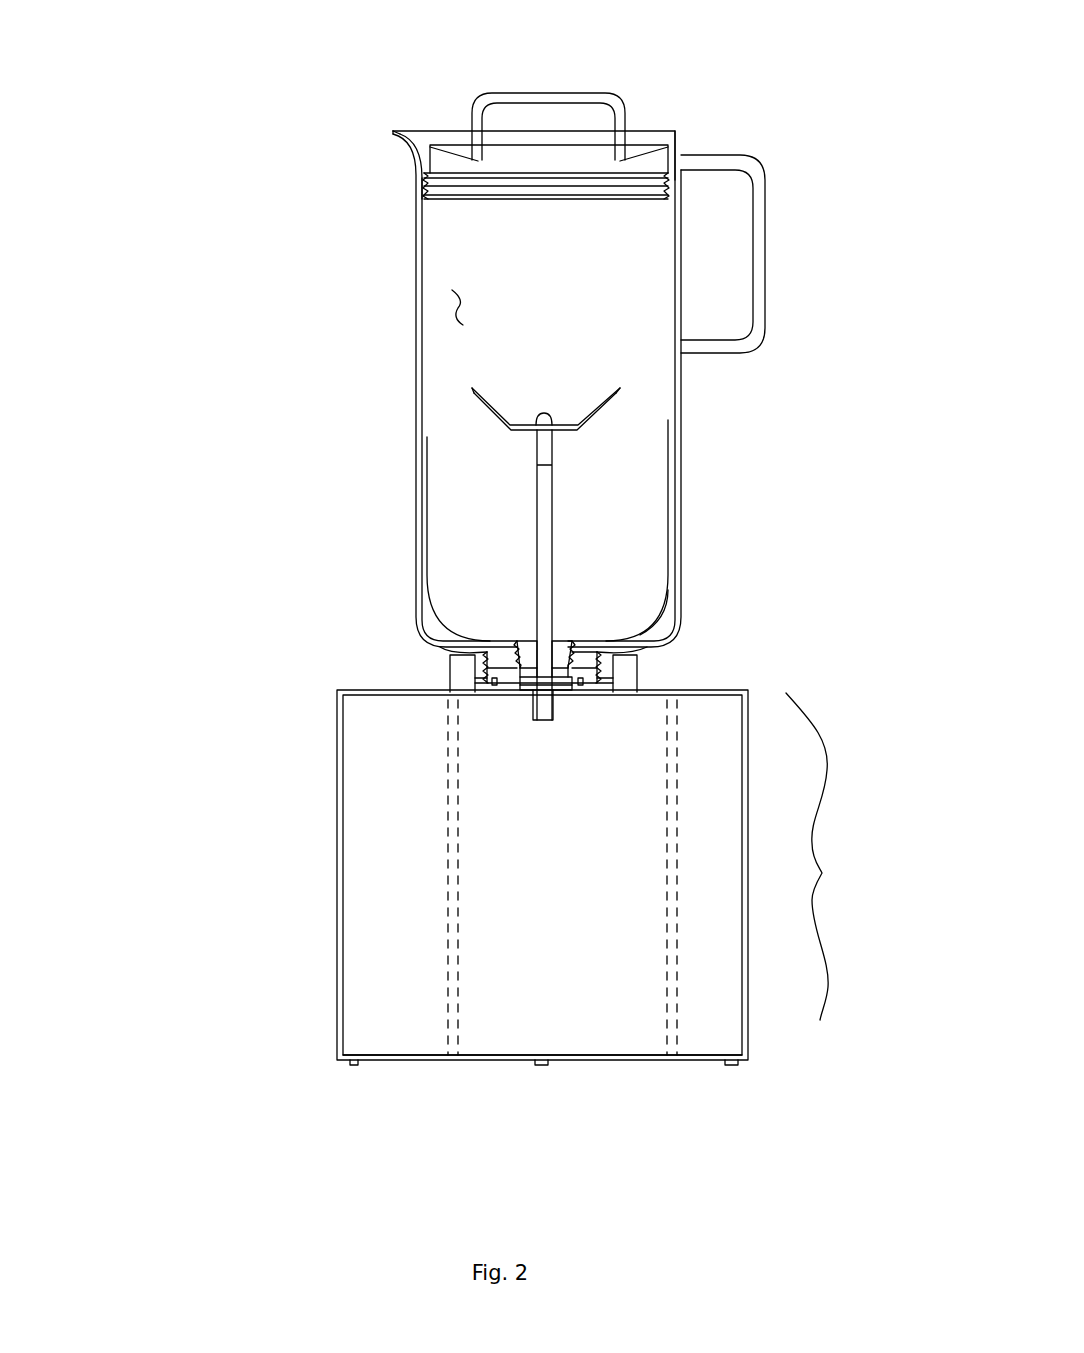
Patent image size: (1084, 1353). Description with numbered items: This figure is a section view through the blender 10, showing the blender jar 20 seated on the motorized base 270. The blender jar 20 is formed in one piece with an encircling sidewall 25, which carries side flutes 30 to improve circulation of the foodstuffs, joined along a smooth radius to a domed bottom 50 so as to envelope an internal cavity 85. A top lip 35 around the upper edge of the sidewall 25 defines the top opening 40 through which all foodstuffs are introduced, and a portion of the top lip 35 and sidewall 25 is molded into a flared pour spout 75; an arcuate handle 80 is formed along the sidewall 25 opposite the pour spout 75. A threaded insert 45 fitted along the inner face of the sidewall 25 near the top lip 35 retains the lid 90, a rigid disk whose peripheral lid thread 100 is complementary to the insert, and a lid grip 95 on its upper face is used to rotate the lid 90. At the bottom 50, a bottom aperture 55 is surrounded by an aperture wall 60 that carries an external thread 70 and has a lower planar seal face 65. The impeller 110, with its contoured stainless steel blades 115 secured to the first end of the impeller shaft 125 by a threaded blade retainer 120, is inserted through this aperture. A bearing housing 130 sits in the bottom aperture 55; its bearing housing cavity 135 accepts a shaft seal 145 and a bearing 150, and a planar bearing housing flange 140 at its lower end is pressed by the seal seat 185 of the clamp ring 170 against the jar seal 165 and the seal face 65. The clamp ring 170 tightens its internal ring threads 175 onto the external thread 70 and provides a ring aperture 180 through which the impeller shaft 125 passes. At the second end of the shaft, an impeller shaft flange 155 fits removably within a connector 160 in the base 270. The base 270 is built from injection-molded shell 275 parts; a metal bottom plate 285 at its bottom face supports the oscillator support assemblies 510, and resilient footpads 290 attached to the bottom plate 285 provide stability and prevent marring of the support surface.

The blender 10 is at (148, 112).
The blender jar 20 is at (316, 320).
The sidewall 25 is at (415, 225).
The side flutes 30 is at (668, 610).
The top lip 35 is at (680, 133).
The top opening 40 is at (452, 128).
The threaded insert 45 is at (422, 183).
The domed bottom 50 is at (482, 655).
The bottom aperture 55 is at (583, 658).
The aperture wall 60 is at (597, 652).
The seal face 65 is at (602, 684).
The external thread 70 is at (608, 660).
The pour spout 75 is at (395, 133).
The arcuate handle 80 is at (760, 252).
The internal cavity 85 is at (458, 308).
The lid 90 is at (637, 164).
The lid grip 95 is at (538, 93).
The lid thread 100 is at (662, 186).
The impeller 110 is at (616, 433).
The blades 115 is at (537, 437).
The threaded blade retainer 120 is at (548, 410).
The impeller shaft 125 is at (548, 498).
The bearing housing 130 is at (522, 645).
The bearing housing cavity 135 is at (572, 660).
The bearing housing flange 140 is at (572, 684).
The shaft seal 145 is at (553, 655).
The bearing 150 is at (520, 642).
The impeller shaft flange 155 is at (530, 688).
The connector 160 is at (487, 678).
The jar seal 165 is at (586, 690).
The clamp ring 170 is at (620, 688).
The ring threads 175 is at (470, 655).
The ring aperture 180 is at (548, 706).
The seal seat 185 is at (490, 690).
The base 270 is at (835, 873).
The shell 275 is at (338, 920).
The bottom plate 285 is at (392, 1045).
The footpads 290 is at (352, 1062).
The oscillator support assemblies 510 is at (675, 832).